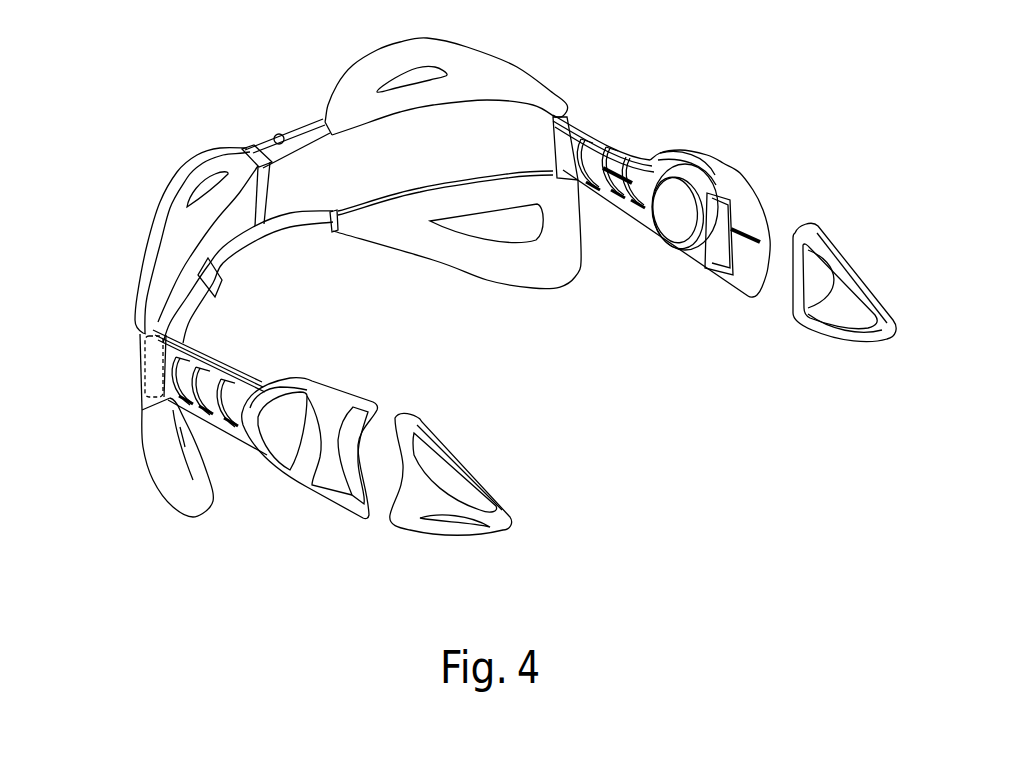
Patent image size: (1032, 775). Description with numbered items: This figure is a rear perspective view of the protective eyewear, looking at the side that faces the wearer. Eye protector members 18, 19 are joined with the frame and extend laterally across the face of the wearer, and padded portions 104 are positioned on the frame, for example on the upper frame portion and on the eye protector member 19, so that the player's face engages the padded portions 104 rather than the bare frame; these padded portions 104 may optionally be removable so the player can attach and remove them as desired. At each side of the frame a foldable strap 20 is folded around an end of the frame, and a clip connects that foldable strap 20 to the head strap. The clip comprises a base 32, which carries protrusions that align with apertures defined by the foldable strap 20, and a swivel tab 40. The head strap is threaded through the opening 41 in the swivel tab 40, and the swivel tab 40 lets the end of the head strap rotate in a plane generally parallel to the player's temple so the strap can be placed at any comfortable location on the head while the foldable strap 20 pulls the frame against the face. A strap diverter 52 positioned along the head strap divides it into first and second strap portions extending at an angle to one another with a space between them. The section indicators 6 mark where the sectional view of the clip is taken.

The section line 6- 6 is at (618, 168).
The eye protector member 18 is at (281, 134).
The eye protector member 19 is at (310, 137).
The foldable strap 20 is at (220, 380).
The base 32 is at (675, 212).
The swivel tab 40 is at (367, 397).
The opening 41 is at (322, 477).
The strap diverter 52 is at (417, 432).
The padded portion 104 is at (171, 241).